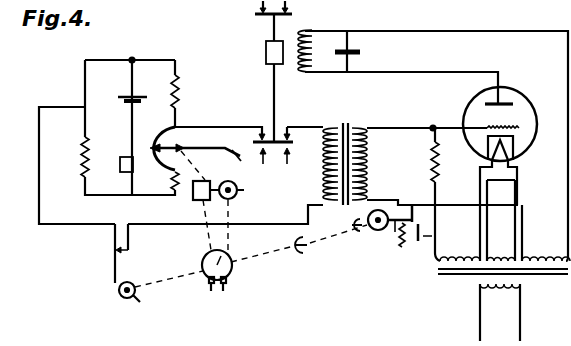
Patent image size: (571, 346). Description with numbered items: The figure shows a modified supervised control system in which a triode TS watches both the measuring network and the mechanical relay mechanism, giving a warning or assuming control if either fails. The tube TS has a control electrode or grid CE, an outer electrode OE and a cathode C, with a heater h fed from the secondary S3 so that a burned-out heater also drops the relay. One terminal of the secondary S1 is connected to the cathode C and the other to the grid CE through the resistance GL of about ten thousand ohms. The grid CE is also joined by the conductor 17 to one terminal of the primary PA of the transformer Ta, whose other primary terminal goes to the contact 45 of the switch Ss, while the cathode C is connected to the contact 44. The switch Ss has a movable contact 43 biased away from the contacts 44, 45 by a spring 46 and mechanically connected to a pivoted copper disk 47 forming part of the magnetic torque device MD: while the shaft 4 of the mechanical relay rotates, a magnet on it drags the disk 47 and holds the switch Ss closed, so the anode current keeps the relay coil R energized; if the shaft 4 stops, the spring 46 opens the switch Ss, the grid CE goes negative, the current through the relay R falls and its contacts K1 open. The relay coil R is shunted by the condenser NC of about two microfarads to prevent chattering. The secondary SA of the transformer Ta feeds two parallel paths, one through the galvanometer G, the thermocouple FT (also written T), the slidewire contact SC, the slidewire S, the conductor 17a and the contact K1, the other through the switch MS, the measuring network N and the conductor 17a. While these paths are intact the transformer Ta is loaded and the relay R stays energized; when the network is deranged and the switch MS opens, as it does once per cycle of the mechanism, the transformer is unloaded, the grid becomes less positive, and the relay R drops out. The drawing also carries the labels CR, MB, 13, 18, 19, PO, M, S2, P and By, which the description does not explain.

The relay coil R is at (312, 32).
The condenser NC is at (362, 53).
The outer electrode OE is at (488, 104).
The triode tube TS is at (521, 97).
The control electrode CE is at (520, 126).
The cathode C is at (514, 144).
The heater h is at (510, 150).
The transformer Ta is at (346, 123).
The conductor 17 is at (392, 127).
The conductor 17a is at (220, 126).
The measuring network N is at (92, 120).
The slidewire resistance S is at (168, 126).
The condenser CR is at (120, 164).
The slidewire contact SC is at (166, 141).
The thermocouple FT is at (242, 157).
The relay contact K1 is at (278, 145).
The galvanometer G is at (237, 191).
The mechanical relay mechanism MB is at (202, 190).
The secondary winding SA is at (325, 183).
The primary winding PA is at (368, 150).
The resistance GL is at (439, 160).
The switch Ss is at (404, 206).
The contact 45 is at (380, 209).
The disk 47 is at (352, 224).
The magnetic torque device MD is at (386, 230).
The spring 46 is at (402, 248).
The movable contact 43 is at (425, 244).
The contact 44 is at (426, 234).
The shaft 4 is at (308, 250).
The shaft 13 is at (356, 232).
The switch blade 18 is at (114, 252).
The switch contact 19 is at (130, 250).
The switch MS is at (100, 256).
The pulley PO is at (139, 298).
The motor M is at (232, 270).
The secondary winding S1 is at (455, 258).
The secondary winding S3 is at (500, 258).
The secondary winding S2 is at (545, 258).
The thermocouple T is at (438, 276).
The primary winding P is at (496, 289).
The supply mains By is at (520, 318).